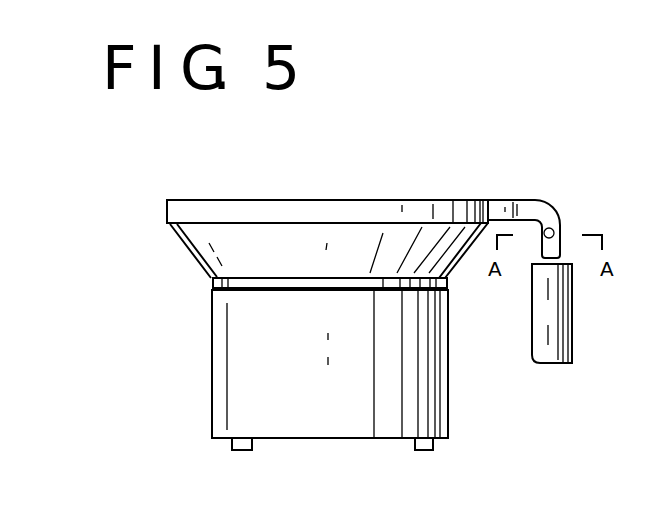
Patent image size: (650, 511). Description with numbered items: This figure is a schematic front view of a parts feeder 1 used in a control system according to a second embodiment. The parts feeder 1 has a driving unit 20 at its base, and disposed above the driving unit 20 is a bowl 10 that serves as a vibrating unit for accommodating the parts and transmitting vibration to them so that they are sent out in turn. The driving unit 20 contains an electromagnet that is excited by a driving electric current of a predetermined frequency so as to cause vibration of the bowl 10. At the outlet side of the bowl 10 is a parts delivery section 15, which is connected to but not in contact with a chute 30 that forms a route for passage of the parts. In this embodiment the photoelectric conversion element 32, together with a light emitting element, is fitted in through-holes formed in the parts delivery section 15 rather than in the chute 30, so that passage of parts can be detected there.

The parts feeder 1 is at (427, 176).
The bowl 10 is at (172, 229).
The parts delivery section 15 is at (538, 206).
The driving unit 20 is at (212, 413).
The chute 30 is at (573, 331).
The photoelectric conversion element 32 is at (557, 226).